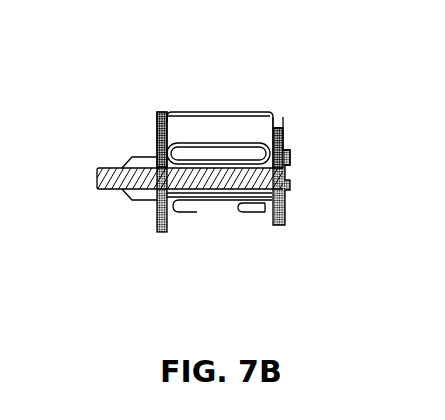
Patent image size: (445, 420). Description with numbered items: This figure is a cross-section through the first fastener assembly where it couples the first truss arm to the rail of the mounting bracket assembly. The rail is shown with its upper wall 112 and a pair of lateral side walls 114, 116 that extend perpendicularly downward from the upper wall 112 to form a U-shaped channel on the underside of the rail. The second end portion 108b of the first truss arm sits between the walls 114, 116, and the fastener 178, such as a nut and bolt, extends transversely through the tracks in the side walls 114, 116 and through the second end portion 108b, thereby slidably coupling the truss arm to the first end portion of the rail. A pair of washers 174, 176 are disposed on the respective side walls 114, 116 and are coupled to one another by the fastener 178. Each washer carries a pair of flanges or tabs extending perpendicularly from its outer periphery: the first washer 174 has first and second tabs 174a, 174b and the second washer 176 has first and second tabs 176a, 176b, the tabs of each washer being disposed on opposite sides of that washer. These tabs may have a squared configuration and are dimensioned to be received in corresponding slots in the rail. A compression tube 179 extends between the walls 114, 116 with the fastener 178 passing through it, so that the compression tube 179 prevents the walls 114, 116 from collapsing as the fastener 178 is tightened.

The second end portion of the first truss arm 108b is at (215, 143).
The upper wall 112 is at (240, 112).
The first lateral side wall 114 is at (283, 125).
The second lateral side wall 116 is at (152, 155).
The washer 174 is at (158, 217).
The first tab 174a is at (183, 112).
The second tab 174b is at (168, 228).
The washer 176 is at (275, 225).
The first tab 176a is at (268, 110).
The second tab 176b is at (262, 225).
The fastener 178 is at (290, 160).
The compression tube 179 is at (215, 157).